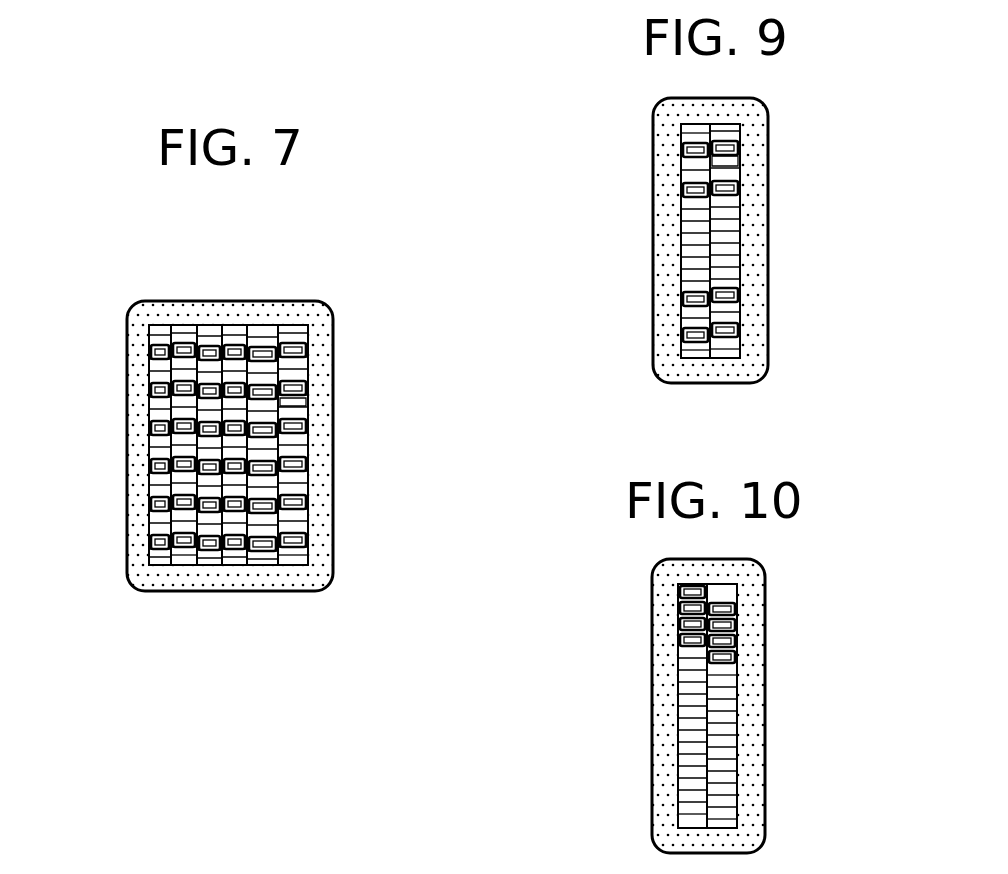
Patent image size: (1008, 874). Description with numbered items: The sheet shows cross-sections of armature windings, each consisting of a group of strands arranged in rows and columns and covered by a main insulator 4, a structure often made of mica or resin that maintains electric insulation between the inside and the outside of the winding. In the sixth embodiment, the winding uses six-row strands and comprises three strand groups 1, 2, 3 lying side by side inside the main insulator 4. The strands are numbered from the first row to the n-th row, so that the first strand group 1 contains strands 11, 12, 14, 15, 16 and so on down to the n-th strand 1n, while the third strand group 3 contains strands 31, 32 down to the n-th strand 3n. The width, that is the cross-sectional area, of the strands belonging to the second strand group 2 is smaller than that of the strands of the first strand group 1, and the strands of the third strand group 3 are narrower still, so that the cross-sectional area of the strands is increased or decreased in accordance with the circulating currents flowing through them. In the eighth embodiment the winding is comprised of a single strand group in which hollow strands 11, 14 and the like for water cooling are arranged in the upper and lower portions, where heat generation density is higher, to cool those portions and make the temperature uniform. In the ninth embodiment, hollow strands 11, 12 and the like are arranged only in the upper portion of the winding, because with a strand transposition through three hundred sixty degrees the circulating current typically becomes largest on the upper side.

In FIG. 7, the first strand group 1 is at (297, 328).
In FIG. 7, the second strand group 2 is at (236, 328).
In FIG. 7, the third strand group 3 is at (183, 328).
In FIG. 7, the main insulator 4 is at (325, 469).
In FIG. 9, the main insulator 4 is at (755, 245).
In FIG. 10, the main insulator 4 is at (752, 710).
In FIG. 7, the strand of the first row 11 is at (300, 350).
In FIG. 9, the strand of the first row 11 is at (735, 148).
In FIG. 10, the strand of the first row 11 is at (732, 605).
In FIG. 7, the strand of the second row 12 is at (302, 367).
In FIG. 9, the strand of the second row 12 is at (730, 162).
In FIG. 10, the strand of the second row 12 is at (732, 622).
In FIG. 7, the strand of the fourth row 14 is at (303, 390).
In FIG. 9, the strand of the fourth row 14 is at (735, 185).
In FIG. 7, the strand of the fifth row 15 is at (302, 404).
In FIG. 10, the strand of the fifth row 15 is at (732, 655).
In FIG. 10, the strand of the sixth row 16 is at (733, 668).
In FIG. 7, the first-row strand of third strand group 31 is at (180, 346).
In FIG. 7, the second-row strand of third strand group 32 is at (180, 364).
In FIG. 7, the n-th row strand of third strand group 3n is at (176, 560).
In FIG. 7, the n-th row strand 1n is at (300, 554).
In FIG. 9, the n-th row strand 1n is at (760, 350).
In FIG. 10, the n-th row strand 1n is at (760, 815).